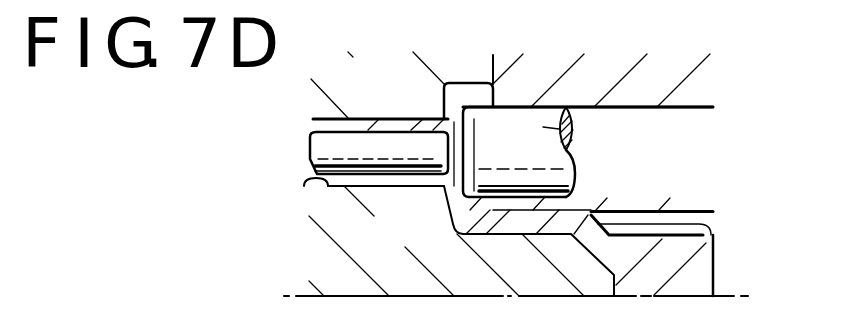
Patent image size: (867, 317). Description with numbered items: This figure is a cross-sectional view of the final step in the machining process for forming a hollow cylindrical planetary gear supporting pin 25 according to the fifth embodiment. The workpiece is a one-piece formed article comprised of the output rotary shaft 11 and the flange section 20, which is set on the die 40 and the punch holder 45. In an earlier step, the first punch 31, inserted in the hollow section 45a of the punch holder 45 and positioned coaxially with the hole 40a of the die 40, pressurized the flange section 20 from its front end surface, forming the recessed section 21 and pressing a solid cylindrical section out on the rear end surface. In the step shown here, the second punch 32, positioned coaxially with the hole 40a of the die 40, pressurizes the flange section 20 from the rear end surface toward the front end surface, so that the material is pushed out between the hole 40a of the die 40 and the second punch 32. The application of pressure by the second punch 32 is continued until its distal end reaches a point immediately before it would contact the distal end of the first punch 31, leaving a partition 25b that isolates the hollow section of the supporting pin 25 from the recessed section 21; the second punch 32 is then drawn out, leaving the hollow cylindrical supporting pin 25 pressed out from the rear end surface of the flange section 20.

The output rotary shaft 11 is at (690, 261).
The flange section 20 is at (479, 100).
The recessed section 21 is at (474, 85).
The hollow cylindrical supporting pin 25 is at (405, 122).
The partition 25b is at (440, 139).
The first punch 31 is at (566, 129).
The second punch 32 is at (301, 136).
The die 40 is at (314, 92).
The hole of the die 40a is at (302, 176).
The punch holder 45 is at (690, 82).
The hollow section of the punch holder 45a is at (691, 186).